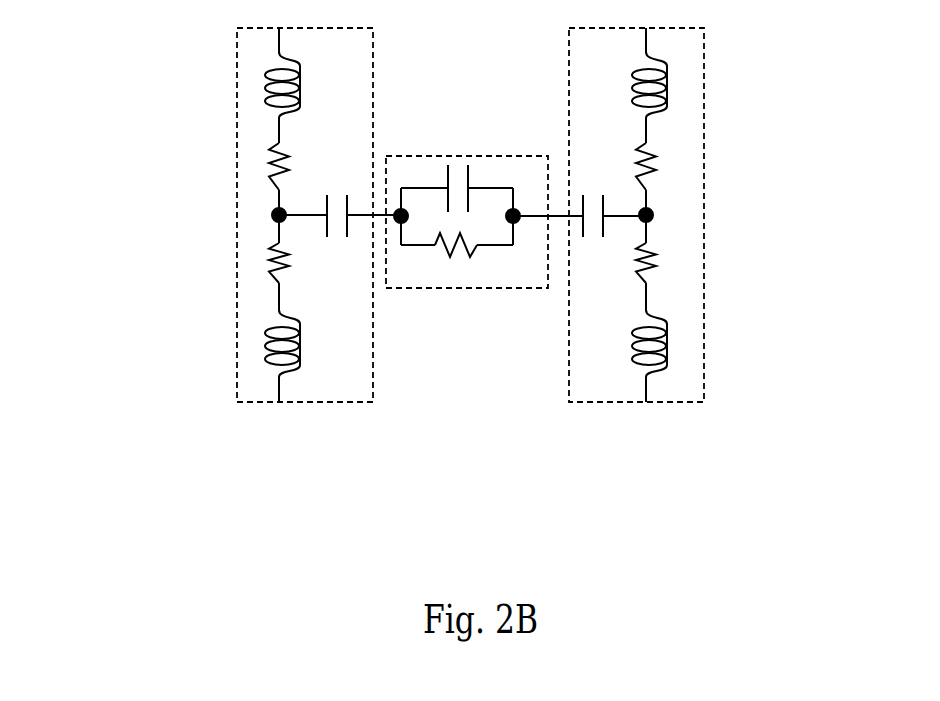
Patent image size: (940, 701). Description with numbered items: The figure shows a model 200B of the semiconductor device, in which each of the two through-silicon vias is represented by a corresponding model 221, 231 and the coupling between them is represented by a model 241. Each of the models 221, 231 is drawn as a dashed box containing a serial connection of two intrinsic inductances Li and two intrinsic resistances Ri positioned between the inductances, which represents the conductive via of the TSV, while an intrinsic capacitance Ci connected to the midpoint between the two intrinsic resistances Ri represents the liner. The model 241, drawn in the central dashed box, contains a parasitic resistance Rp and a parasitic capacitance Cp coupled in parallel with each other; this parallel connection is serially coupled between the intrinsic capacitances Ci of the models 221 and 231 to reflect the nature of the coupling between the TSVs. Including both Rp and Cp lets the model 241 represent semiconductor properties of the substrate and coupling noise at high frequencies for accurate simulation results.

The model 200B is at (918, 79).
The model 221 is at (237, 185).
The model 231 is at (704, 194).
The model 241 is at (467, 288).